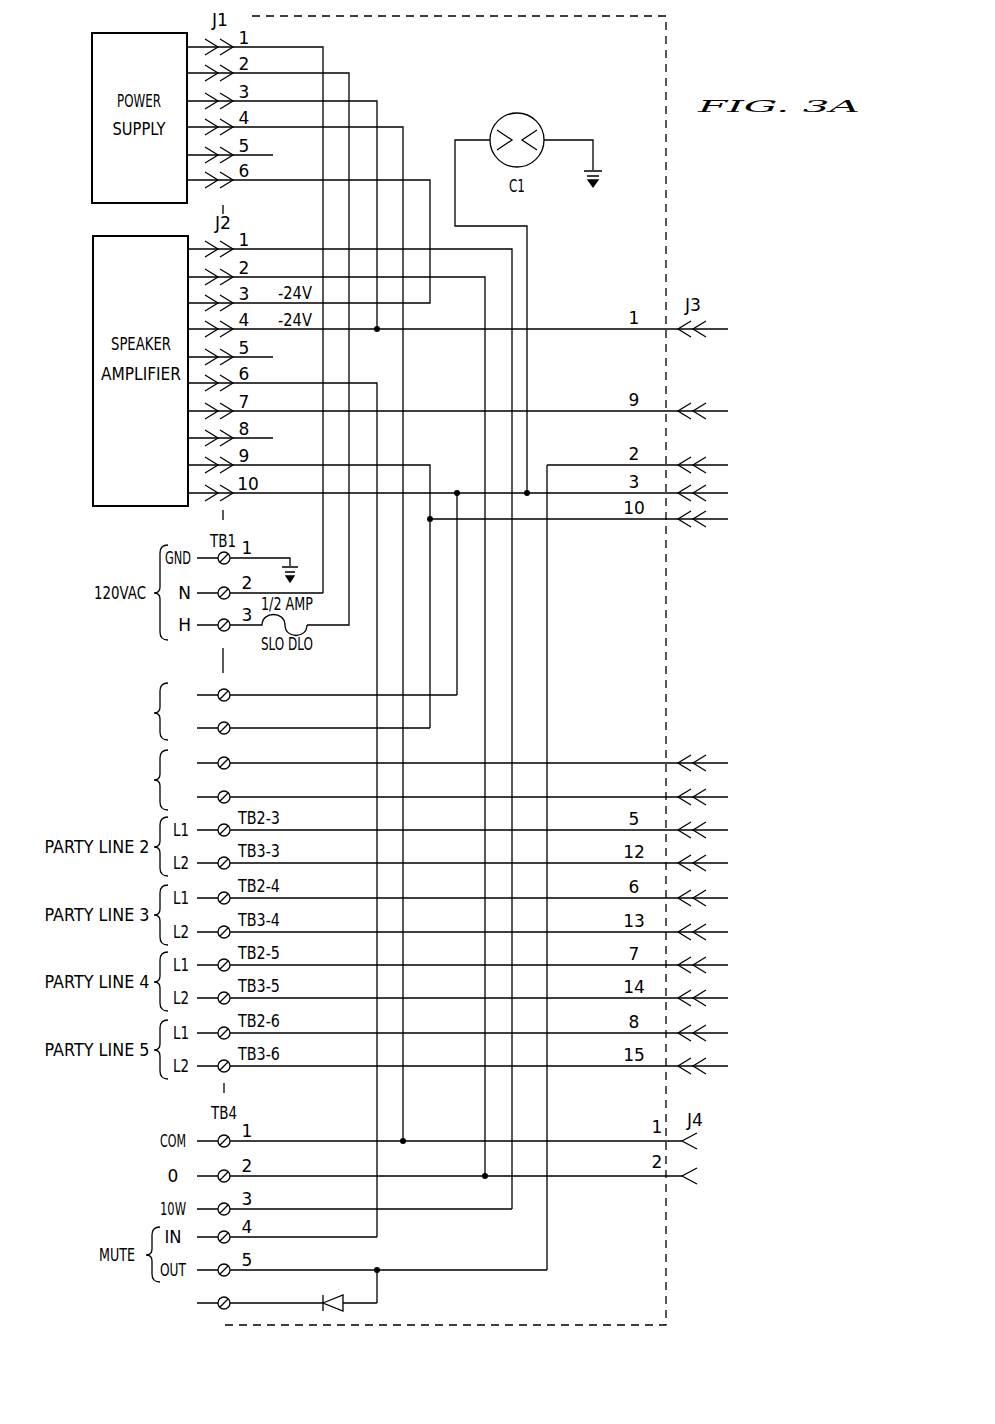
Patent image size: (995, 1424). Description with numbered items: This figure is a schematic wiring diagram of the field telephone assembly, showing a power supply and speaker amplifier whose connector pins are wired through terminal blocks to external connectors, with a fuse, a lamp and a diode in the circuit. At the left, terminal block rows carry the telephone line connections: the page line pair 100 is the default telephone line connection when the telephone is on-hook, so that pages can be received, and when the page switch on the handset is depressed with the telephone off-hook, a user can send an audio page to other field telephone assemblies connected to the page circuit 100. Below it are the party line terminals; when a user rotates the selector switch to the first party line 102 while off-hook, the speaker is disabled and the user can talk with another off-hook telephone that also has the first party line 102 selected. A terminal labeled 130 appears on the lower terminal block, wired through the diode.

The page line pair 100 is at (129, 690).
The first party line 102 is at (87, 760).
The terminal 130 is at (298, 1295).